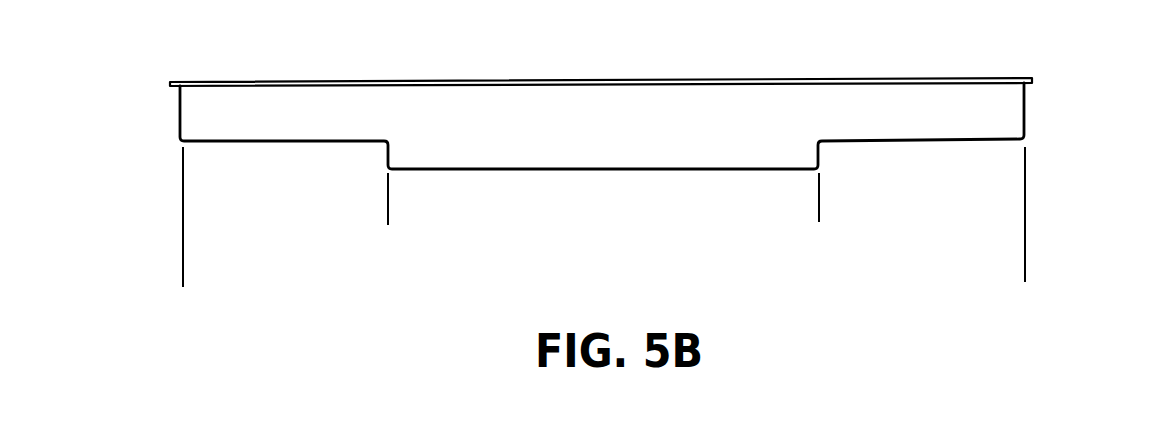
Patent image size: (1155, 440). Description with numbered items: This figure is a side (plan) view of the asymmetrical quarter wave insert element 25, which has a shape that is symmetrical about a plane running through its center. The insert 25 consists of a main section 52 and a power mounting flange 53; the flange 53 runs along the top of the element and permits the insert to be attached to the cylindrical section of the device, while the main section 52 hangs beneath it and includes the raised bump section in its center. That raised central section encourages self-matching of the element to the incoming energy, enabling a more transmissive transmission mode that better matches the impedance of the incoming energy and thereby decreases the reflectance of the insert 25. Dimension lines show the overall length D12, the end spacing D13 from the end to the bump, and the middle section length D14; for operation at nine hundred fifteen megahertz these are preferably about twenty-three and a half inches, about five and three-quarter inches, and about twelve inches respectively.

The asymmetrical insert element 25 is at (651, 127).
The main section 52 is at (607, 138).
The power mounting flange 53 is at (592, 77).
The overall length D12 is at (1025, 268).
The end spacing D13 is at (388, 208).
The middle section length D14 is at (819, 206).